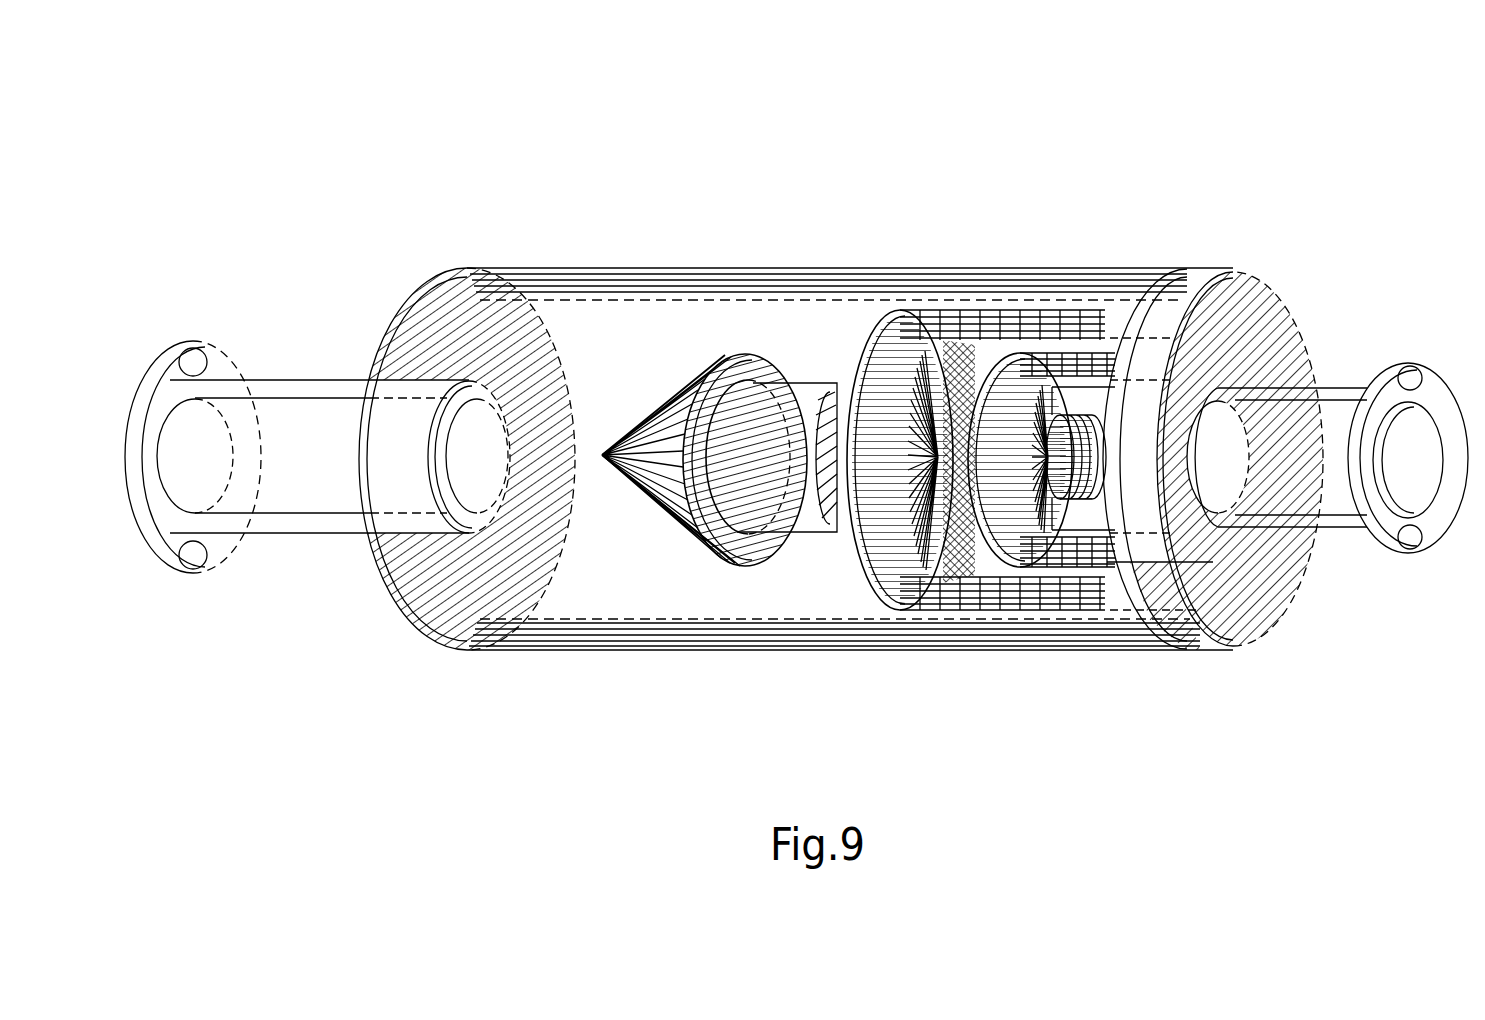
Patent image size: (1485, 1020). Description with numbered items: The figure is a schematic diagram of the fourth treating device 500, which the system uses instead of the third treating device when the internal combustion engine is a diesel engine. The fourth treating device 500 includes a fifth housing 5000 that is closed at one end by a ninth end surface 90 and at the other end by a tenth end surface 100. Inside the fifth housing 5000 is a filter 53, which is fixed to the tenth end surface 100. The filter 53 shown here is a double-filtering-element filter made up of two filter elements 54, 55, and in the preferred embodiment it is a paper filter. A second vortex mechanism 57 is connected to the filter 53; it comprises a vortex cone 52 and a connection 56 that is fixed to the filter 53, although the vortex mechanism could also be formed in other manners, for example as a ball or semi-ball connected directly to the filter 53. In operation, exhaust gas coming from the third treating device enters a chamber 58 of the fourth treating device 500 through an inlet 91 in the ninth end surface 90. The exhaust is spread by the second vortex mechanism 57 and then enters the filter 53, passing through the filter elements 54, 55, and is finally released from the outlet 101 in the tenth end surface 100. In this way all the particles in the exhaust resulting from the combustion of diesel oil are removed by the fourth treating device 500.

The fifth housing 5000 is at (790, 266).
The ninth end surface 90 is at (439, 596).
The inlet 91 is at (433, 420).
The chamber 58 is at (595, 331).
The vortex cone 52 is at (641, 404).
The second vortex mechanism 57 is at (679, 596).
The connection 56 is at (778, 536).
The filter element 54 is at (934, 297).
The filter element 55 is at (1056, 342).
The filter 53 is at (1074, 304).
The outlet 101 is at (1185, 288).
The tenth end surface 100 is at (1201, 568).
The fourth treating device 500 is at (1205, 429).